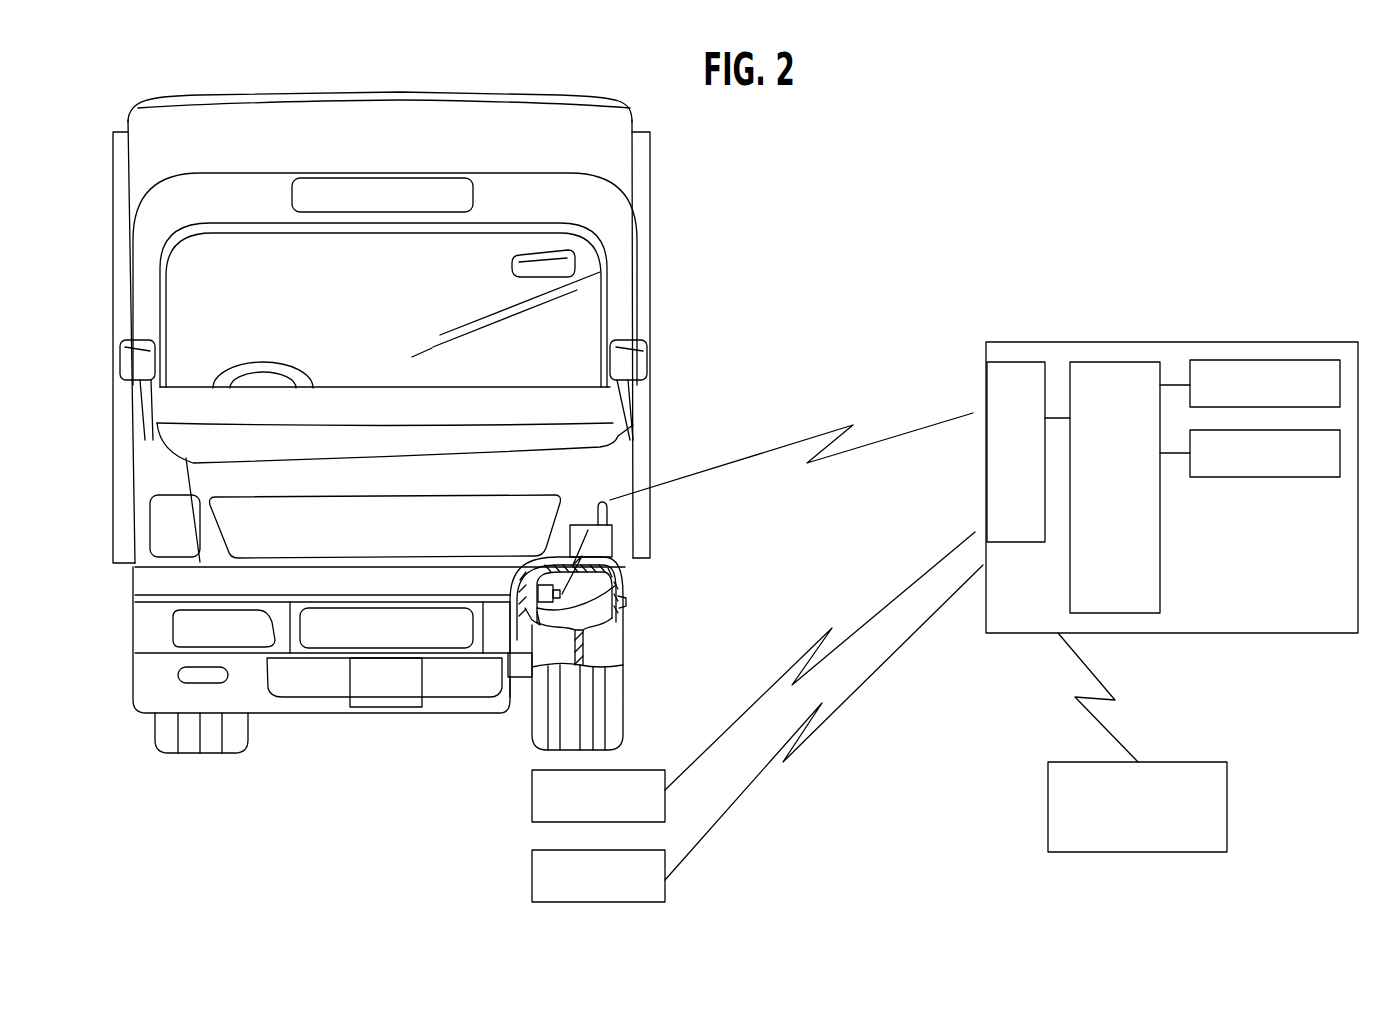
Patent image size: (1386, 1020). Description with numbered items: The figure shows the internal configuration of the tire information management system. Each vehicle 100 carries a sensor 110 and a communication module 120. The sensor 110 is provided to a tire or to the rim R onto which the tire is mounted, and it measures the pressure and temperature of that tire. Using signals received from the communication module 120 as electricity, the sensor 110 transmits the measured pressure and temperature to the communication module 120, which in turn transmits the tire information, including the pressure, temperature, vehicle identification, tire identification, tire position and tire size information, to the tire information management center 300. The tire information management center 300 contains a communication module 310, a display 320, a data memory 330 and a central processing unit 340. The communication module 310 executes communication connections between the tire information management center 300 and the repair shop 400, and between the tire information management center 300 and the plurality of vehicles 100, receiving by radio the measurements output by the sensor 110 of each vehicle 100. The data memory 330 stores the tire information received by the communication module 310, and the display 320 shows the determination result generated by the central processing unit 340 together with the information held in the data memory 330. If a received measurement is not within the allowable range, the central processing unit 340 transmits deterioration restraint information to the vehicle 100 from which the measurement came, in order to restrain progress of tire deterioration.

The vehicle 100 is at (438, 497).
The sensor 110 is at (618, 590).
The communication module 120 is at (613, 537).
The rim R is at (588, 648).
The tire information management center 300 is at (1134, 457).
The communication module 310 is at (985, 378).
The display 320 is at (1272, 360).
The data memory 330 is at (1260, 478).
The central processing unit (CPU) 340 is at (1070, 557).
The repair shop 400 is at (1227, 805).